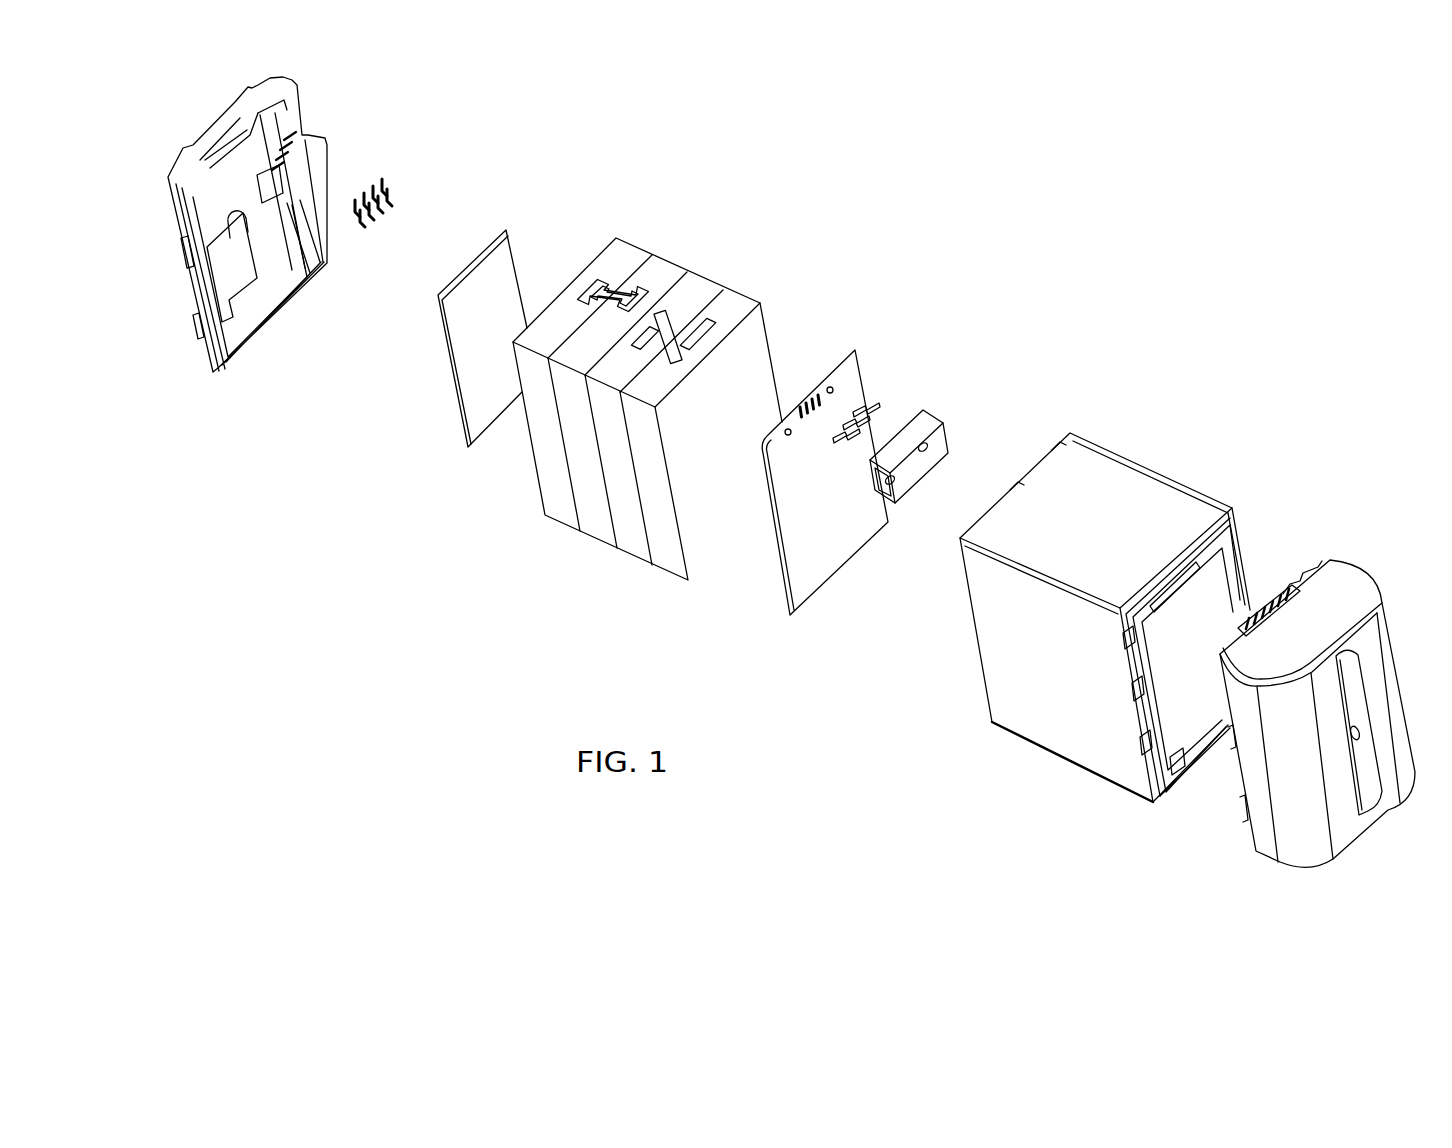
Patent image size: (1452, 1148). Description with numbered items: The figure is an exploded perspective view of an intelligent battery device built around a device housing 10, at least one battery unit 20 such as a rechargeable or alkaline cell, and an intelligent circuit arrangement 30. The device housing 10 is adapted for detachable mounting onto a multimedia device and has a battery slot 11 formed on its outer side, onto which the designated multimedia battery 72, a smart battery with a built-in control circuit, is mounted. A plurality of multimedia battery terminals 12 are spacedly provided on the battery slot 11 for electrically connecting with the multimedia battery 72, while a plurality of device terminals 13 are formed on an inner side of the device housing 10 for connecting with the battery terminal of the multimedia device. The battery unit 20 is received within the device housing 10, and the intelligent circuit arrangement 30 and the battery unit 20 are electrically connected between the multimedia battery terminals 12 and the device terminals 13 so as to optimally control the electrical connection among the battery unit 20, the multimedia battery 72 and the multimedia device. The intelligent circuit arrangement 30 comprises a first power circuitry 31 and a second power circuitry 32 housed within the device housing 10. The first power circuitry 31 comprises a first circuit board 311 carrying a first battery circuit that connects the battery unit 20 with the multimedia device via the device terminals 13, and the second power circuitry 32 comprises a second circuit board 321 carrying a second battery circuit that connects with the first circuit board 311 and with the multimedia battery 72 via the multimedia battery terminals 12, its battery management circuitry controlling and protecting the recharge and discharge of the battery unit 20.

The device housing 10 is at (1076, 635).
The battery slot 11 is at (1178, 737).
The multimedia battery terminals 12 is at (820, 437).
The device terminals 13 is at (392, 205).
The battery unit 20 is at (753, 368).
The intelligent circuit arrangement 30 is at (775, 414).
The first power circuitry 31 is at (663, 379).
The first circuit board 311 is at (477, 290).
The second power circuitry 32 is at (747, 484).
The second circuit board 321 is at (805, 548).
The multimedia battery 72 is at (1302, 823).